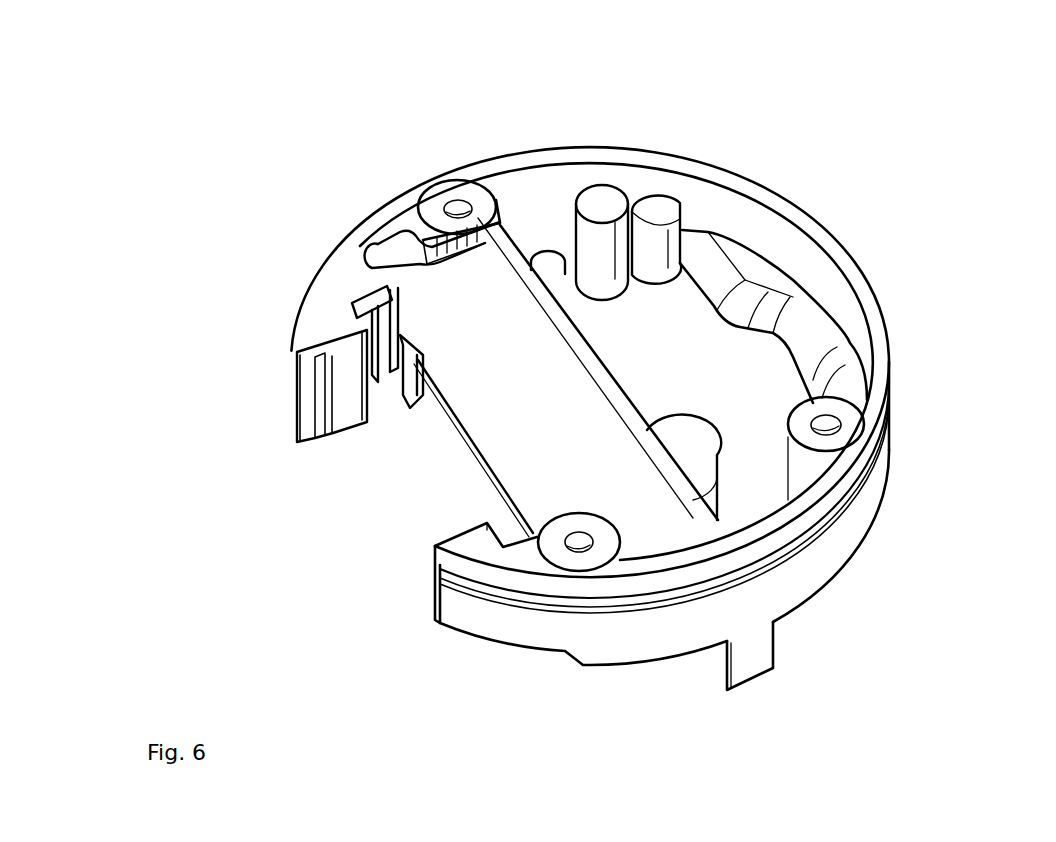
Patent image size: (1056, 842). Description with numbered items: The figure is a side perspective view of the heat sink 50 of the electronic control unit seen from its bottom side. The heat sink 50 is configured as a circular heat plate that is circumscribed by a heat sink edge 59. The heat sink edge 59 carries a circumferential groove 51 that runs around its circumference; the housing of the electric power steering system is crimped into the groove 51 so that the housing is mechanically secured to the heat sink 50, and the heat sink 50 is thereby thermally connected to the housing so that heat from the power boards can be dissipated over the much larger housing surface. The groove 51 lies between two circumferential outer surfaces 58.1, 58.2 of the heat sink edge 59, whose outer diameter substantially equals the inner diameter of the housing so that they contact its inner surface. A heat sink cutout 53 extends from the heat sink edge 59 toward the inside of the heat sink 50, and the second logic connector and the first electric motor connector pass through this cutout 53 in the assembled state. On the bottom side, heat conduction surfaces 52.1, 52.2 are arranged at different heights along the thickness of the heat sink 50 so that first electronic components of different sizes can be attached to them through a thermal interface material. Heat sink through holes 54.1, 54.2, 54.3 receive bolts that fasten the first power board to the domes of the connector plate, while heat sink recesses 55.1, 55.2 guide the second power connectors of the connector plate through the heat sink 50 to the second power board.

The heat sink 50 is at (760, 175).
The groove 51 is at (535, 598).
The heat conduction surface 52.1 is at (495, 415).
The heat conduction surface 52.2 is at (665, 360).
The heat sink cutout 53 is at (407, 478).
The heat sink through hole 54.1 is at (580, 552).
The heat sink through hole 54.2 is at (836, 424).
The heat sink through hole 54.3 is at (452, 200).
The heat sink recess 55.1 is at (380, 247).
The heat sink recess 55.2 is at (549, 258).
The circumferential outer surface 58.1 is at (795, 521).
The circumferential outer surface 58.2 is at (812, 562).
The heat sink edge 59 is at (297, 312).